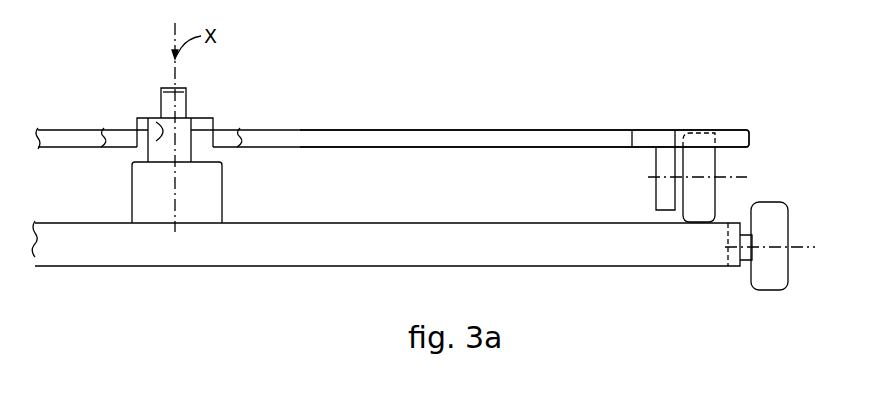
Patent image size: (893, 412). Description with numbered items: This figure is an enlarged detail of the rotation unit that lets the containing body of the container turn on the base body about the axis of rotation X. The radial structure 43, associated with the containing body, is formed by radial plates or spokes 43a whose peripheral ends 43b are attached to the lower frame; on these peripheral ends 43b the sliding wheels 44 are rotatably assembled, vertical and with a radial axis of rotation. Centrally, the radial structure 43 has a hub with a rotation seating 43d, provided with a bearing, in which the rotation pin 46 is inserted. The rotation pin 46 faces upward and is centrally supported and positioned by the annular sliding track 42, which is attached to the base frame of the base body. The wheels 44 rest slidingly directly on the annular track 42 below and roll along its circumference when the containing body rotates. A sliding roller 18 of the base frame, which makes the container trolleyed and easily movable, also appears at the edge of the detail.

The sliding rollers 18 is at (768, 265).
The annular sliding track 42 is at (668, 247).
The radial structure 43 is at (450, 130).
The radial plates or spokes 43a is at (353, 137).
The peripheral ends 43b is at (733, 138).
The rotation seating 43d is at (158, 118).
The wheels 44 is at (707, 198).
The rotation pin 46 is at (180, 123).